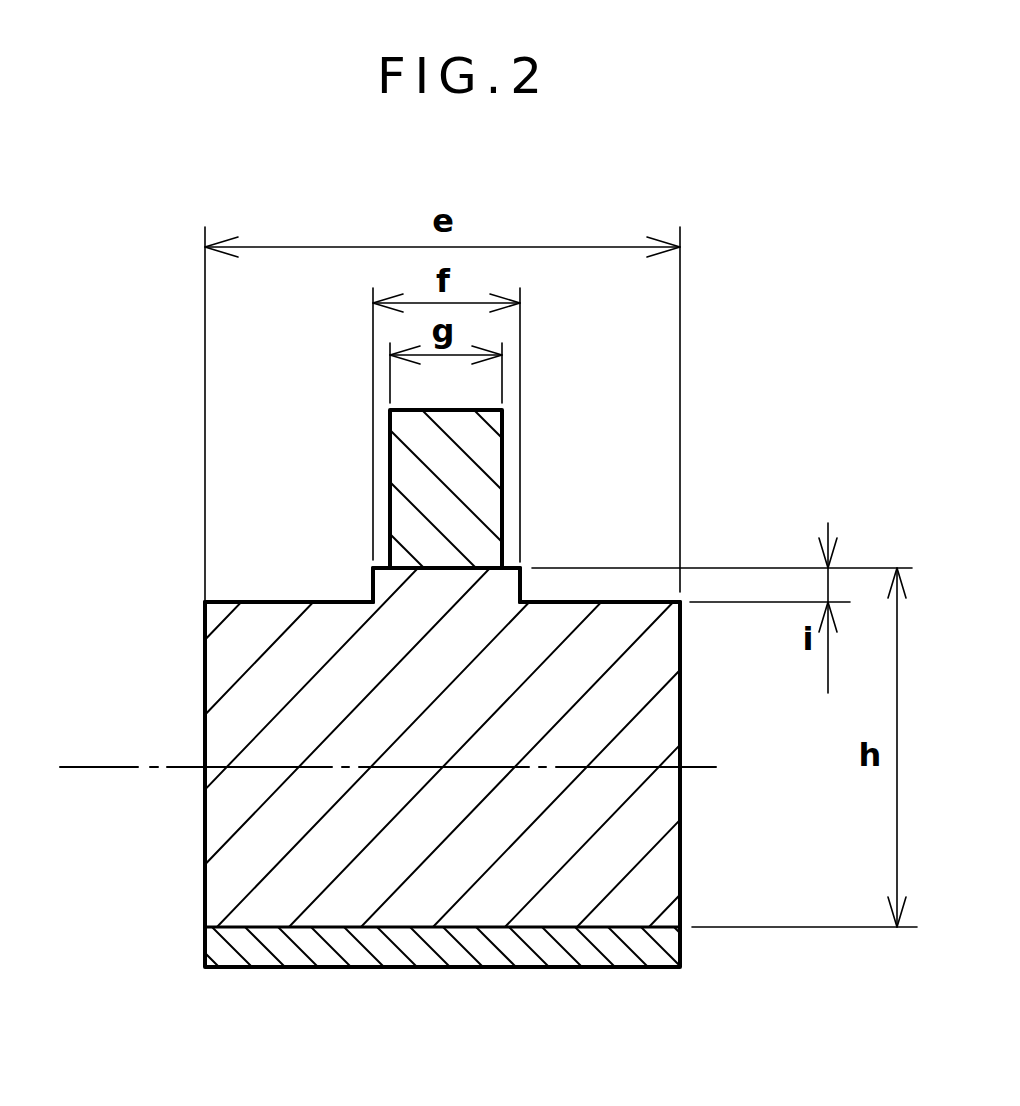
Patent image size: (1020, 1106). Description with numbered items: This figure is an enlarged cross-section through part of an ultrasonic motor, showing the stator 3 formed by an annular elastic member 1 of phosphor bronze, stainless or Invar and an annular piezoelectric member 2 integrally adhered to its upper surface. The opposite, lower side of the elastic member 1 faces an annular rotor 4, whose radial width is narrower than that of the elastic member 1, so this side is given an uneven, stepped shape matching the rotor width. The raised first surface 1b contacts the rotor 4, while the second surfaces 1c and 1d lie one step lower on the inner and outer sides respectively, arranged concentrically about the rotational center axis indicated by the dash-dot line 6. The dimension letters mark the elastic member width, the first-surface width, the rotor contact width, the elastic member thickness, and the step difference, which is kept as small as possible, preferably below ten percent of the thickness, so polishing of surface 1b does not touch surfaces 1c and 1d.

The elastic member 1 is at (222, 817).
The first surface 1b is at (385, 560).
The second surface 1c is at (312, 600).
The second surface 1d is at (558, 600).
The piezoelectric member 2 is at (570, 957).
The stator 3 is at (185, 672).
The rotor 4 is at (473, 482).
The center line 6 is at (105, 762).